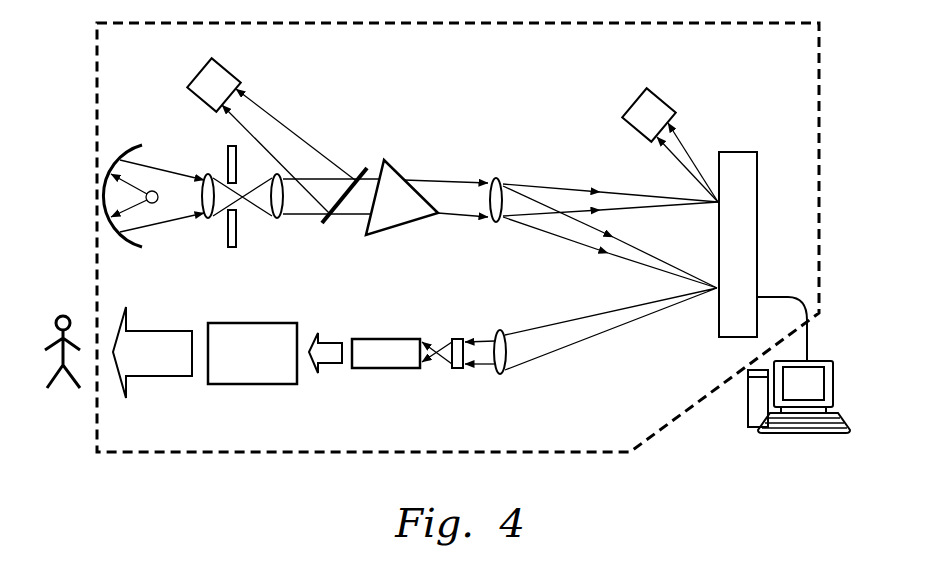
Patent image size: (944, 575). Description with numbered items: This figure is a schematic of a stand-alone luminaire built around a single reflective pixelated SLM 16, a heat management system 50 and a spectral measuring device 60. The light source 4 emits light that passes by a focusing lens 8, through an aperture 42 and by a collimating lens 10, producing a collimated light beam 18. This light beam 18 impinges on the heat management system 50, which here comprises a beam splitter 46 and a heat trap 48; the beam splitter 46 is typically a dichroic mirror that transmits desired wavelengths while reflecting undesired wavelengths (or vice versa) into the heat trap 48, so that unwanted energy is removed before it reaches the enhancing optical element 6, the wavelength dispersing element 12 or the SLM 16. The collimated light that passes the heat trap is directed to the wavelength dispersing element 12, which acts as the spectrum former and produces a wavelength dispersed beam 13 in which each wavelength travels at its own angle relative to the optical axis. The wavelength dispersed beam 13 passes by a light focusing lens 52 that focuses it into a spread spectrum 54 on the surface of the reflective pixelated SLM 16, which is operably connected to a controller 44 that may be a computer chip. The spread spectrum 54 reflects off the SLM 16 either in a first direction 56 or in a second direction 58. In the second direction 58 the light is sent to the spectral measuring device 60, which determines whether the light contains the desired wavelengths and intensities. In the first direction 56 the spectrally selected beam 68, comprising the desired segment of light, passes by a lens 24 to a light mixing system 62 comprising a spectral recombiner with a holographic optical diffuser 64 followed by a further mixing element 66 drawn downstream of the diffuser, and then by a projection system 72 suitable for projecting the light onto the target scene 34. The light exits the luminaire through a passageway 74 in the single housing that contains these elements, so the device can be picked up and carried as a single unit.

The light source 4 is at (142, 146).
The enhancing optical element 6 is at (204, 157).
The focusing lens 8 is at (207, 218).
The collimating lens 10 is at (278, 218).
The wavelength dispersing element 12 is at (407, 223).
The wavelength dispersed beam 13 is at (445, 181).
The reflective pixelated SLM 16 is at (758, 188).
The light beam 18 is at (341, 221).
The lens 24 is at (502, 378).
The target scene 34 is at (63, 403).
The aperture 42 is at (237, 240).
The controller 44 is at (748, 418).
The beam splitter 46 is at (363, 170).
The heat trap 48 is at (232, 72).
The heat management system 50 is at (305, 121).
The light focusing lens 52 is at (498, 178).
The spread spectrum 54 is at (577, 190).
The first direction 56 is at (593, 338).
The second direction 58 is at (690, 143).
The spectral measuring device 60 is at (633, 100).
The light mixing system 62 is at (440, 376).
The holographic optical diffuser 64 is at (464, 338).
The detector 66 is at (395, 339).
The spectrally selected beam 68 is at (548, 323).
The projection system 72 is at (252, 386).
The passageway 74 is at (95, 75).